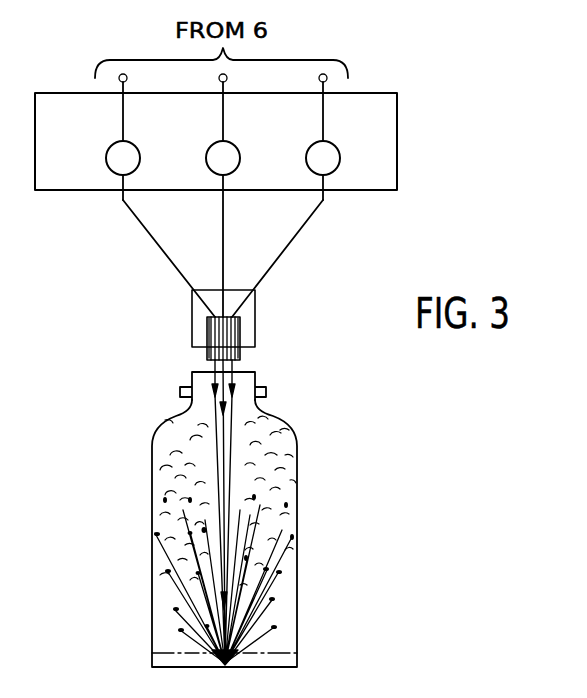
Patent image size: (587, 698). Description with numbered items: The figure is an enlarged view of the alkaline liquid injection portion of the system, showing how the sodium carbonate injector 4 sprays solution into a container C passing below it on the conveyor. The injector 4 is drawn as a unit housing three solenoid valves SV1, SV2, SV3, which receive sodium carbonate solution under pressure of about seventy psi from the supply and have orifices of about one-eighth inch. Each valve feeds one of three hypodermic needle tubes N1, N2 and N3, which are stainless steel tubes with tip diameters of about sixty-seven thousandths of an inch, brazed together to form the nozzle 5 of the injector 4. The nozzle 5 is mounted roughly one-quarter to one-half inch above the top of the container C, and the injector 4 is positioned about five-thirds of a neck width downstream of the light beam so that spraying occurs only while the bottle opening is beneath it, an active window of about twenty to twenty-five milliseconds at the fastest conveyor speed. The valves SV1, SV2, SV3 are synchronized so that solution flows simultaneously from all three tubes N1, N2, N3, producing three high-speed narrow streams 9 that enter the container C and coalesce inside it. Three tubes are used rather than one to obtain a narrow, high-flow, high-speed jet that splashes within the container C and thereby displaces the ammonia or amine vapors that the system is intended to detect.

The sodium carbonate injector 4 is at (255, 195).
The nozzle 5 is at (257, 305).
The narrow streams of sodium carbonate 9 is at (225, 476).
The container C is at (283, 413).
The hypodermic needle tube N1 is at (205, 341).
The hypodermic needle tube N2 is at (205, 321).
The hypodermic needle tube N3 is at (240, 333).
The solenoid valve SV1 is at (107, 154).
The solenoid valve SV2 is at (207, 154).
The solenoid valve SV3 is at (307, 155).